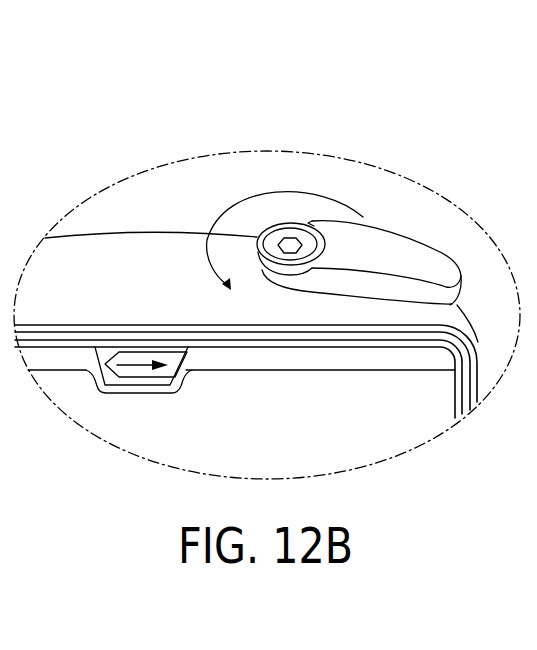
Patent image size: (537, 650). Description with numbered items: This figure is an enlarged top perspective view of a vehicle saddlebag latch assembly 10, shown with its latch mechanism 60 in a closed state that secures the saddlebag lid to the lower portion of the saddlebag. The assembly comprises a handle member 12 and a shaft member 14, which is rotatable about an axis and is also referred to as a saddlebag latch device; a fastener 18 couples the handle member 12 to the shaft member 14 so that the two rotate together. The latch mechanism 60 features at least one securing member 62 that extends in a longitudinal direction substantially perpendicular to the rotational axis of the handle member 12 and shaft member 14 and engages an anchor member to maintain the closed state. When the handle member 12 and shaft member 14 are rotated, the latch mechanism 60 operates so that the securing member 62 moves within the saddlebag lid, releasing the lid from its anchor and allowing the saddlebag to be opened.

The saddlebag latch assembly 10 is at (365, 194).
The handle member 12 is at (410, 258).
The shaft member 14 is at (315, 184).
The fastener 18 is at (293, 234).
The latch mechanism 60 is at (179, 197).
The securing member 62 is at (138, 351).